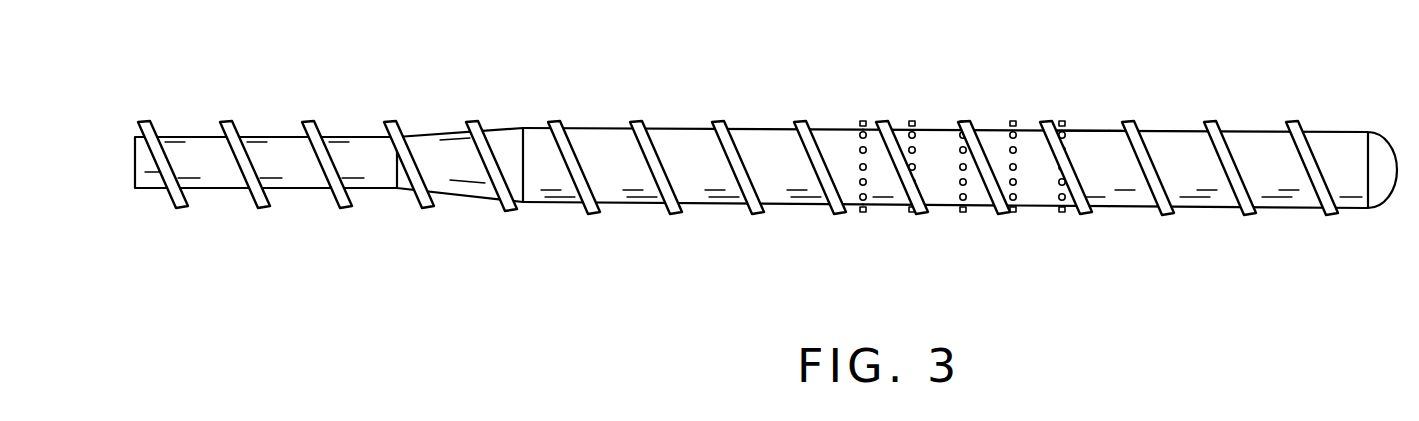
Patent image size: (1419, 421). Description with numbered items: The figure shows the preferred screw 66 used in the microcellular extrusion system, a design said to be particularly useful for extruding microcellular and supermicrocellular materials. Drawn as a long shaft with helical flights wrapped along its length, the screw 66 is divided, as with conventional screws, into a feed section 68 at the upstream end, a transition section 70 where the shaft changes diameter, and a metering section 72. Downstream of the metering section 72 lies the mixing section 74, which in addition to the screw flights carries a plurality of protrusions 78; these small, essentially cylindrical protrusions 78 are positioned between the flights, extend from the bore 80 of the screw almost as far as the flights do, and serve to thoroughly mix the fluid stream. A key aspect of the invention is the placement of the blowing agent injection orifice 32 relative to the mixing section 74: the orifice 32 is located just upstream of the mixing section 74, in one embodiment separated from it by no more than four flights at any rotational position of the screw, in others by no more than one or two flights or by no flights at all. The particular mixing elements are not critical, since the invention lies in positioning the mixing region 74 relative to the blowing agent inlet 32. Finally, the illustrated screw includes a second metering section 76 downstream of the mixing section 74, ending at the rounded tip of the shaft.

The blowing agent injection orifice 32 is at (816, 27).
The screw 66 is at (436, 79).
The feed section 68 is at (135, 238).
The transition section 70 is at (523, 240).
The metering section 72 is at (863, 241).
The mixing section 74 is at (863, 243).
The second metering section 76 is at (1368, 244).
The protrusions 78 is at (1012, 125).
The bore of the screw 80 is at (1092, 127).